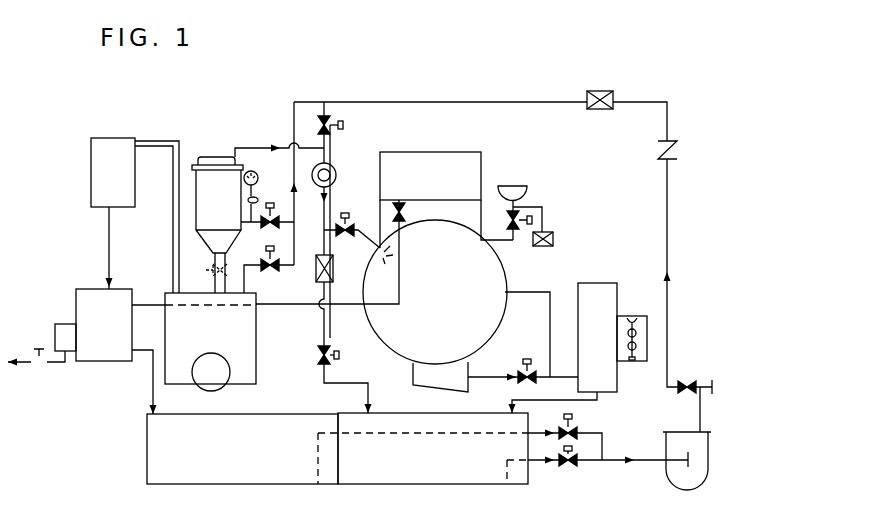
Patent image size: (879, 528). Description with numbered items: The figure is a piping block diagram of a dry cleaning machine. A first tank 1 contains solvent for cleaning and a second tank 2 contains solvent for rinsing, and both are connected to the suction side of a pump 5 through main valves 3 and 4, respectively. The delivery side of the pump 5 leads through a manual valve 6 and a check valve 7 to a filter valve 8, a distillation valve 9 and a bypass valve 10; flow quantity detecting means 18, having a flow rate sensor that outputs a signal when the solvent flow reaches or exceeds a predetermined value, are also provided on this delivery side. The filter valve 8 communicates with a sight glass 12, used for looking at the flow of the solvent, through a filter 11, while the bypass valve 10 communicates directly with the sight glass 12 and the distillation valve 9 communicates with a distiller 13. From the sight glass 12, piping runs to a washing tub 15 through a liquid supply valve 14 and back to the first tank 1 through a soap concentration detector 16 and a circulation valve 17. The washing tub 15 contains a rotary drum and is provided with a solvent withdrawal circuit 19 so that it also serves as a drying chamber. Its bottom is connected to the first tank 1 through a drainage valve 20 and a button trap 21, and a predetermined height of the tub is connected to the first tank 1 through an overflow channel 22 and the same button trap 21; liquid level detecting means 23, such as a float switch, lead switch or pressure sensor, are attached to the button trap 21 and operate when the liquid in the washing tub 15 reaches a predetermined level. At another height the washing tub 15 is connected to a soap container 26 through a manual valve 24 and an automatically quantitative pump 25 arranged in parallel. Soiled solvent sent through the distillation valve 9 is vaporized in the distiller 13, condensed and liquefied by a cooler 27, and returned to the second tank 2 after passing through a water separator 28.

The first tank 1 is at (460, 478).
The second tank 2 is at (160, 484).
The main valve 3 is at (571, 468).
The main valve 4 is at (578, 426).
The pump 5 is at (667, 470).
The manual valve 6 is at (687, 380).
The check valve 7 is at (680, 152).
The filter valve 8 is at (270, 203).
The distillation valve 9 is at (276, 270).
The bypass valve 10 is at (328, 115).
The filter 11 is at (208, 157).
The sight glass 12 is at (314, 186).
The distiller 13 is at (256, 380).
The liquid supply valve 14 is at (346, 212).
The washing tub 15 is at (506, 278).
The soap concentration detector 16 is at (316, 268).
The circulation valve 17 is at (331, 352).
The flow quantity detecting means 18 is at (590, 91).
The solvent withdrawal circuit 19 is at (481, 152).
The drainage valve 20 is at (523, 360).
The button trap 21 is at (617, 283).
The overflow channel 22 is at (550, 288).
The liquid level detecting means 23 is at (648, 318).
The manual valve 24 is at (532, 215).
The automatically quantitative pump 25 is at (556, 238).
The soap container 26 is at (520, 186).
The cooler 27 is at (133, 138).
The water separator 28 is at (130, 289).